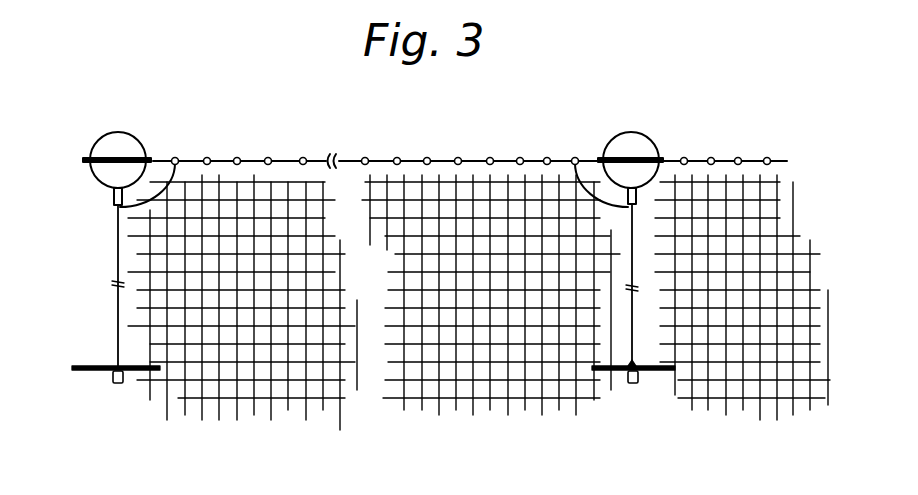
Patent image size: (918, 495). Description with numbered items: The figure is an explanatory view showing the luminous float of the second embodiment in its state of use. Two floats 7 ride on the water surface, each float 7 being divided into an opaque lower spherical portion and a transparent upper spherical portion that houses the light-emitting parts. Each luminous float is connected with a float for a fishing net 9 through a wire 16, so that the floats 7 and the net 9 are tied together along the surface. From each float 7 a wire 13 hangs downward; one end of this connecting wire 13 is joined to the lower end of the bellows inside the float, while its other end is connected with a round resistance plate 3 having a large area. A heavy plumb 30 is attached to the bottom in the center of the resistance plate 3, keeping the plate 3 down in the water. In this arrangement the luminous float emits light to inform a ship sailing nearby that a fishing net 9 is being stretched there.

The resistance plate 3 is at (95, 365).
The float 7 is at (128, 137).
The fishing net 9 is at (325, 404).
The wire 13 is at (117, 237).
The wire 16 is at (160, 188).
The plumb 30 is at (117, 385).